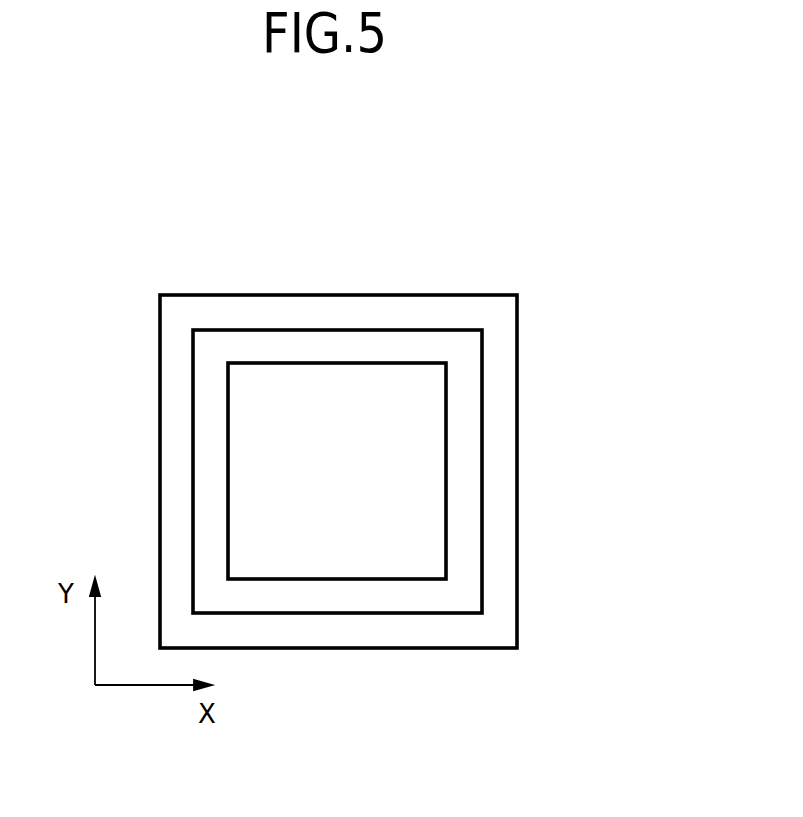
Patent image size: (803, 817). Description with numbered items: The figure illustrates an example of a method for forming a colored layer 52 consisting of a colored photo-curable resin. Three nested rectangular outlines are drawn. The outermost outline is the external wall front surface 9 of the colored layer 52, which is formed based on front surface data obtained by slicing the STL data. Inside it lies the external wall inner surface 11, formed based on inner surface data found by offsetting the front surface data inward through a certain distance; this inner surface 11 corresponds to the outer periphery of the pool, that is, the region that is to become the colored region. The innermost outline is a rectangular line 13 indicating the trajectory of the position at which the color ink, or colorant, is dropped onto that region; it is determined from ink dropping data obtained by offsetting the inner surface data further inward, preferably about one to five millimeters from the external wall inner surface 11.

The external wall front surface 9 is at (517, 472).
The external wall inner surface 11 is at (482, 363).
The rectangular line 13 is at (446, 552).
The colored layer 52 is at (433, 228).